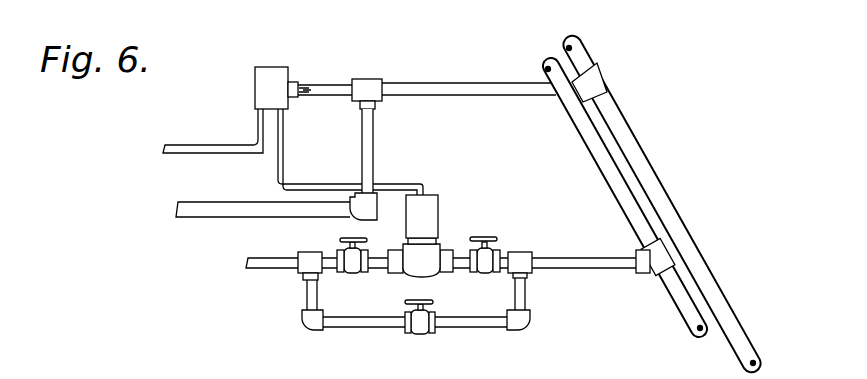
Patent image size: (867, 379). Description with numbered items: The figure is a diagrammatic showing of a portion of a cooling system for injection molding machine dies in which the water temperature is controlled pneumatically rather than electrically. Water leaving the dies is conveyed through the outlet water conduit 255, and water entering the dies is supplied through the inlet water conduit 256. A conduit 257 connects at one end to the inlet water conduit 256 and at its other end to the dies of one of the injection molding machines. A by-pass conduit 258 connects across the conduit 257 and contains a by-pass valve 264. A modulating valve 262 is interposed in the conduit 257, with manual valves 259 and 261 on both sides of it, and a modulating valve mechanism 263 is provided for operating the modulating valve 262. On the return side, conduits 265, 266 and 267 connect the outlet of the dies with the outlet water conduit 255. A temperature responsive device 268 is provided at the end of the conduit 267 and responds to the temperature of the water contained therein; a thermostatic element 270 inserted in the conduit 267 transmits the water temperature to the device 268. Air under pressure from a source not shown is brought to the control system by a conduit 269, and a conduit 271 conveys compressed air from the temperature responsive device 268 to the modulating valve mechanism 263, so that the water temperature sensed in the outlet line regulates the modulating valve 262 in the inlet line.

The conduit 255 is at (628, 138).
The conduit 256 is at (583, 142).
The conduit 257 is at (287, 266).
The by-pass conduit 258 is at (363, 324).
The manual valve 259 is at (488, 253).
The manual valve 261 is at (355, 272).
The modulating valve 262 is at (425, 269).
The modulating valve mechanism 263 is at (429, 200).
The by-pass valve 264 is at (423, 334).
The conduit 265 is at (214, 211).
The conduit 266 is at (374, 139).
The conduit 267 is at (453, 85).
The temperature responsive device 268 is at (276, 72).
The conduit 269 is at (187, 149).
The thermostatic element 270 is at (312, 96).
The conduit 271 is at (412, 170).